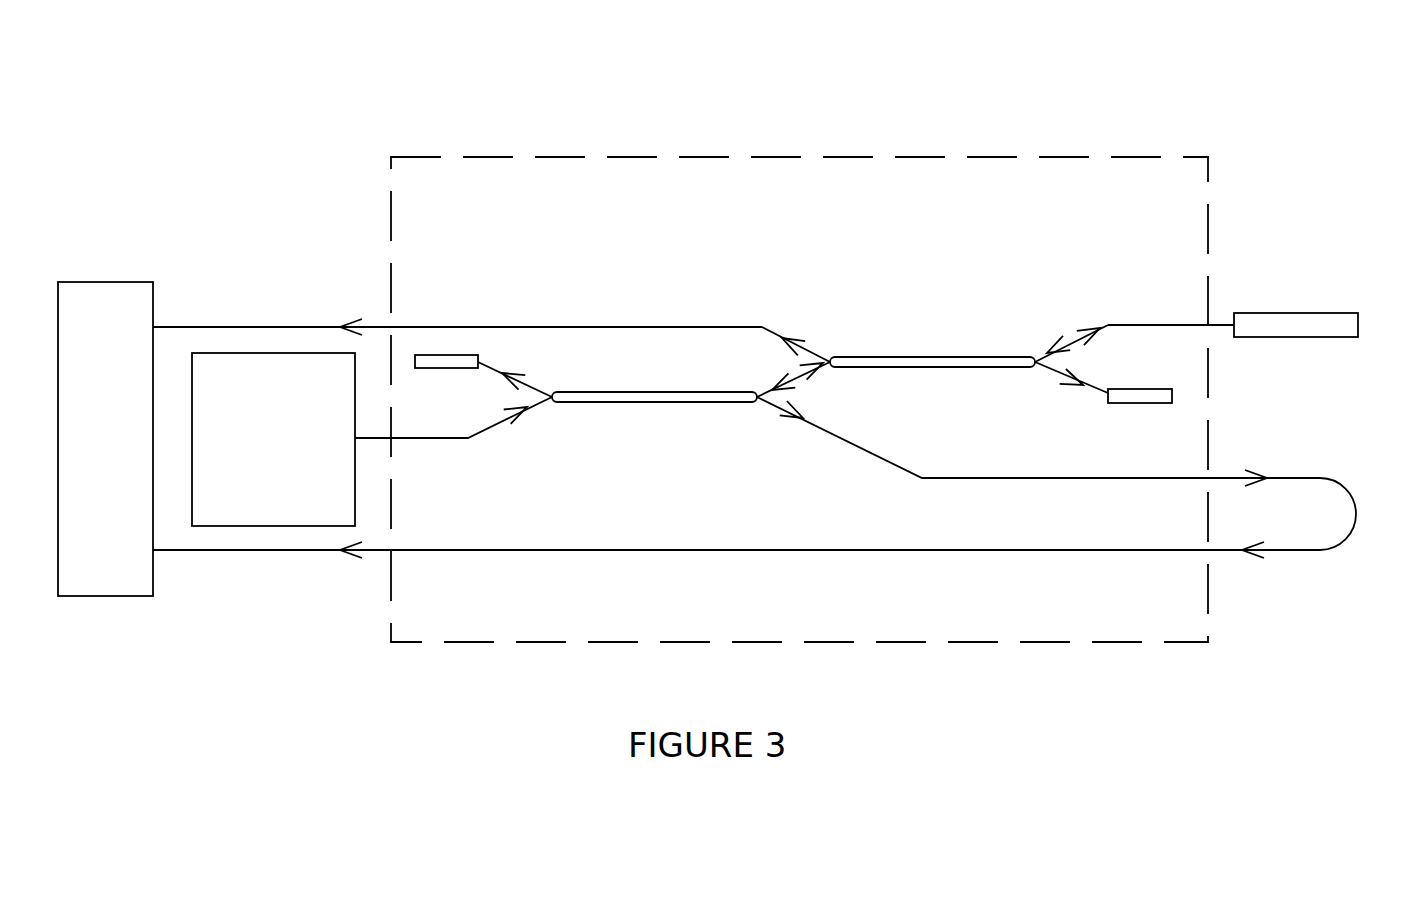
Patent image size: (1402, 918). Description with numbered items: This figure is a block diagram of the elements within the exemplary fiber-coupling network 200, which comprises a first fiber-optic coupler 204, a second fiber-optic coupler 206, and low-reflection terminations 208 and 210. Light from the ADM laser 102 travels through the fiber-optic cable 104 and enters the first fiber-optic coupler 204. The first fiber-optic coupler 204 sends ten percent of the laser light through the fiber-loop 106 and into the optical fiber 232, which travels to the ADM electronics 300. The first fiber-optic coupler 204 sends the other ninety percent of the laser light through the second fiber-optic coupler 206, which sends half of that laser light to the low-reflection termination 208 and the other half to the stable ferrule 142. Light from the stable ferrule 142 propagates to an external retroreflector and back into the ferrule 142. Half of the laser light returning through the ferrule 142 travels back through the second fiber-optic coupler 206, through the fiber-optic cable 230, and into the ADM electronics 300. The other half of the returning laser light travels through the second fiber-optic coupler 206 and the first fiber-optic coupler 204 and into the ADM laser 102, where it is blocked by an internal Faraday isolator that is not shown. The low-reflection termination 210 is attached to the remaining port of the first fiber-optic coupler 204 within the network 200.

The fiber-coupling network 200 is at (573, 127).
The ADM electronics 300 is at (105, 282).
The ADM laser 102 is at (355, 506).
The fiber-optic cable 230 is at (238, 327).
The optical fiber 232 is at (238, 551).
The fiber-optic cable 104 is at (447, 438).
The low-reflection termination 210 is at (455, 355).
The first fiber-optic coupler 204 is at (658, 402).
The second fiber-optic coupler 206 is at (932, 357).
The low-reflection termination 208 is at (1142, 403).
The stable ferrule 142 is at (1358, 325).
The fiber-loop 106 is at (1357, 507).